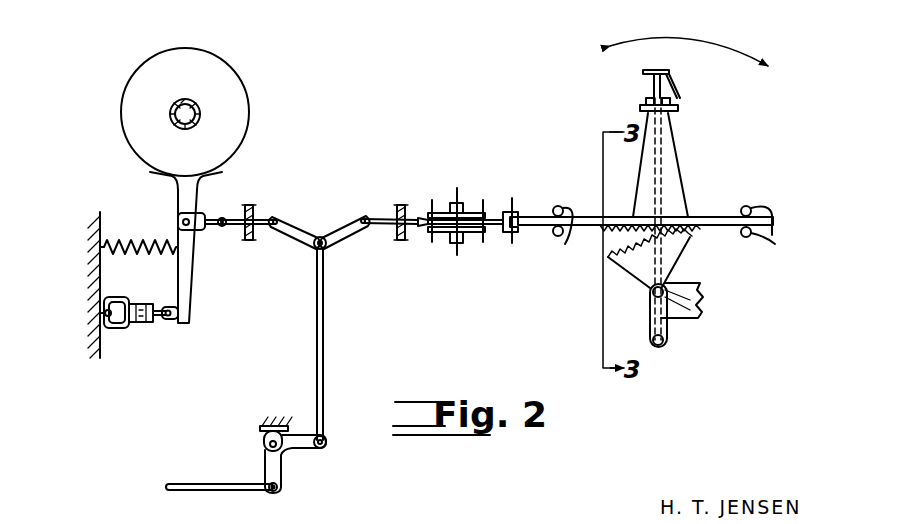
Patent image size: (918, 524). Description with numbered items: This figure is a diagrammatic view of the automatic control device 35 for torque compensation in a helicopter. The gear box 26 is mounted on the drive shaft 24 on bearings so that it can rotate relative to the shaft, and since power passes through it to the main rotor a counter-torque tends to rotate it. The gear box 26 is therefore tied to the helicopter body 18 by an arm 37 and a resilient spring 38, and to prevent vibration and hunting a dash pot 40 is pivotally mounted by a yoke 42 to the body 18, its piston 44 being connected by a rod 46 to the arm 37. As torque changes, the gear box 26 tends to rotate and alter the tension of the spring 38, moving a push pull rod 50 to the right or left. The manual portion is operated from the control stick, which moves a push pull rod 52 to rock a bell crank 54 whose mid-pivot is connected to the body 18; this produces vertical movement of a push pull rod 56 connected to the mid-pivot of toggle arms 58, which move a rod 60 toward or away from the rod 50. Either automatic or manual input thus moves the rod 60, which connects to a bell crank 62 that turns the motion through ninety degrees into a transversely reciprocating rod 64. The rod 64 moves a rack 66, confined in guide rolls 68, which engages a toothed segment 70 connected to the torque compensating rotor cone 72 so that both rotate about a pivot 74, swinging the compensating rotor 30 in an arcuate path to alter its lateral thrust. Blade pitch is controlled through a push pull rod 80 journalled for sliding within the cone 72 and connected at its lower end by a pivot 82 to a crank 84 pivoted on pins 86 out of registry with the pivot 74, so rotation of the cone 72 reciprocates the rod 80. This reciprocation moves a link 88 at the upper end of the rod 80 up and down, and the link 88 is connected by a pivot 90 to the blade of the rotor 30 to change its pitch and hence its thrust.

The helicopter body 18 is at (97, 266).
The drive shaft 24 is at (200, 103).
The gear box 26 is at (235, 74).
The compensating rotor 30 is at (633, 105).
The automatic control device 35 is at (116, 188).
The arm 37 is at (189, 258).
The spring 38 is at (157, 238).
The dash pot 40 is at (134, 340).
The yoke 42 is at (120, 330).
The piston 44 is at (140, 325).
The rod 46 is at (166, 322).
The push pull rod 50 is at (232, 218).
The push pull rod 52 is at (215, 491).
The bell crank 54 is at (283, 468).
The push pull rod 56 is at (324, 288).
The toggle arms 58 is at (320, 236).
The rod 60 is at (385, 217).
The bell crank 62 is at (445, 211).
The rod 64 is at (488, 218).
The rack 66 is at (695, 216).
The guide rolls 68 is at (565, 244).
The toothed segment 70 is at (680, 250).
The torque compensating rotor cone 72 is at (682, 178).
The pivot 74 is at (700, 307).
The push pull rod 80 is at (676, 152).
The pivot 82 is at (663, 346).
The crank 84 is at (651, 330).
The pins 86 is at (653, 294).
The link 88 is at (681, 92).
The pivot 90 is at (682, 107).